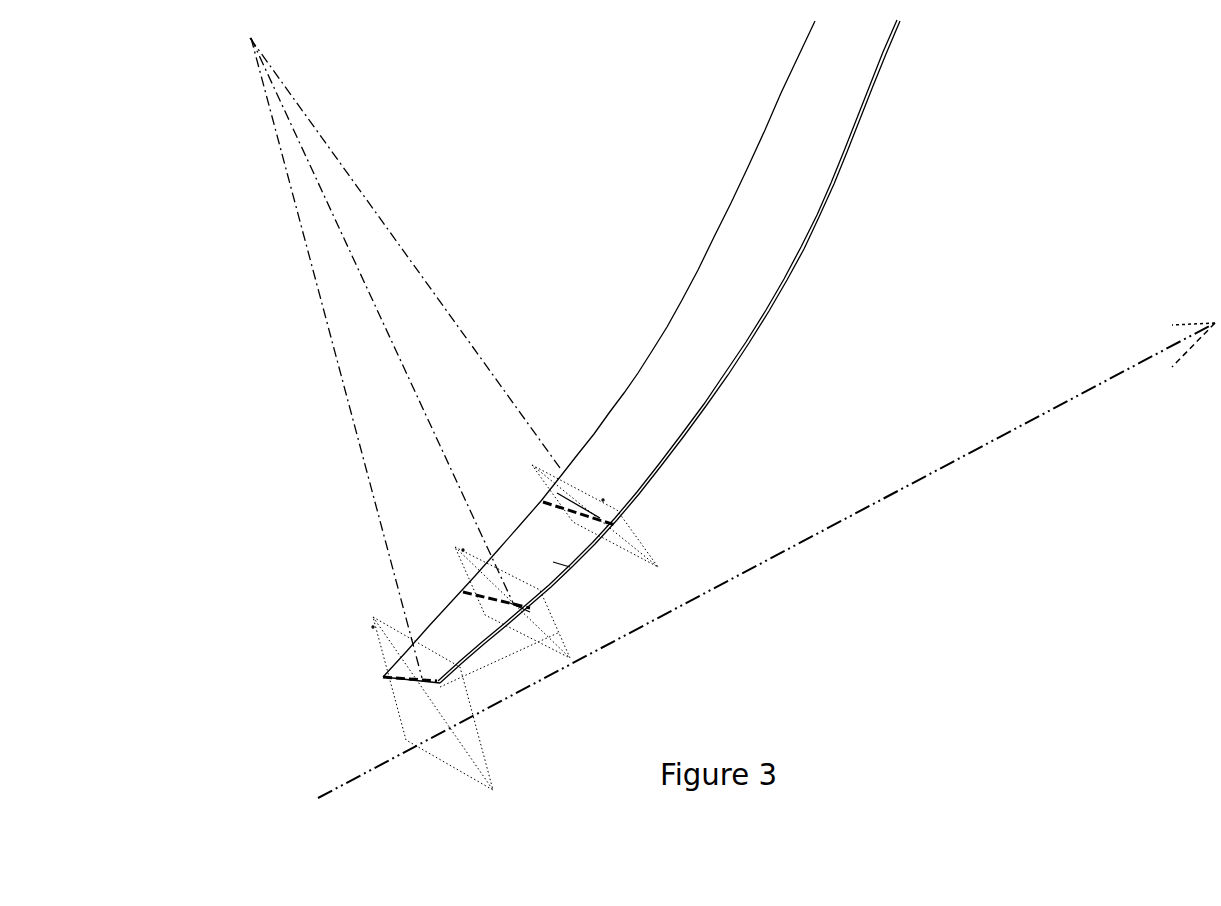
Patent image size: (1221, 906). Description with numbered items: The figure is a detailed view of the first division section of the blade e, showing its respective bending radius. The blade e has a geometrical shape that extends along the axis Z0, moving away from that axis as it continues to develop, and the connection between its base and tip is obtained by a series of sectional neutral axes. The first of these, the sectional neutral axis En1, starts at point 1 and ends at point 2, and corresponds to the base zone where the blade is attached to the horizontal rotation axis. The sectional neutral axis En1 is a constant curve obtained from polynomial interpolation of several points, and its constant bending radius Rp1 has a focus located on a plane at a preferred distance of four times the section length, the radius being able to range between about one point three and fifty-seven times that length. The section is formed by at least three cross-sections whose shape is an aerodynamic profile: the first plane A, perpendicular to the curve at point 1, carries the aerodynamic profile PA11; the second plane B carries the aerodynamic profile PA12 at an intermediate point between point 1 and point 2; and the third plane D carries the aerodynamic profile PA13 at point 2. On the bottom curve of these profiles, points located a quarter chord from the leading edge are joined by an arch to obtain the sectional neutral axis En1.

The bending radius Rp1 is at (249, 38).
The blade e is at (802, 140).
The first division section En1 is at (553, 563).
The point 1 is at (430, 680).
The point 2 is at (620, 515).
The aerodynamic profile PA11 is at (407, 685).
The aerodynamic profile PA12 is at (467, 593).
The aerodynamic profile PA13 is at (563, 505).
The first plane A is at (373, 627).
The second plane B is at (463, 550).
The third plane D is at (603, 500).
The axis Z0 is at (1019, 271).